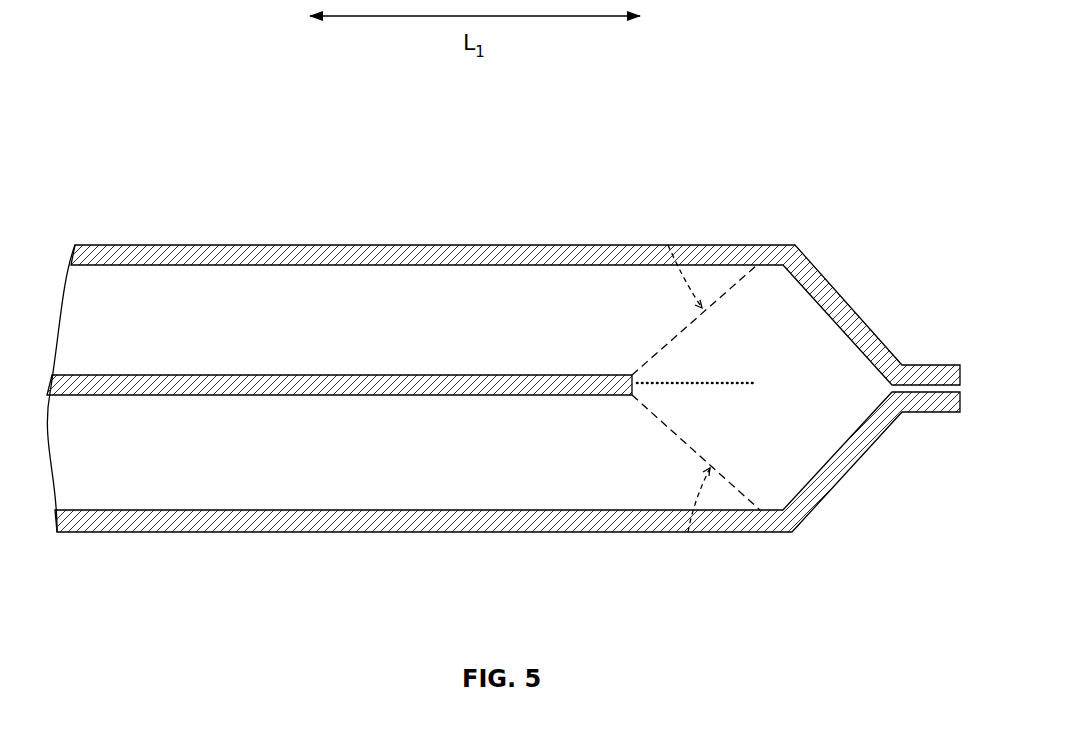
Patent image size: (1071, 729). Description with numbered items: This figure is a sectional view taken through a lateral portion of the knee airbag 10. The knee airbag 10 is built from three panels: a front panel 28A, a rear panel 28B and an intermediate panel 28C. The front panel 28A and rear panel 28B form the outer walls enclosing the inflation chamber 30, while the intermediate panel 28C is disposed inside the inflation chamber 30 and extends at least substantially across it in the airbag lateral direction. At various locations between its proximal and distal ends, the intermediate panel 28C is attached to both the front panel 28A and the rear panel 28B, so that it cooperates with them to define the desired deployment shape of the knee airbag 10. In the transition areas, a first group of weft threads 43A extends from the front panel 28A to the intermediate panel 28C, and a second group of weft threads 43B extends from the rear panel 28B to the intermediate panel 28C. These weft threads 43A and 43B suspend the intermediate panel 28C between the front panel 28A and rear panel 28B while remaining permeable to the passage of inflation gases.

The knee airbag 10 is at (740, 108).
The front panel 28A is at (553, 245).
The rear panel 28B is at (445, 534).
The intermediate panel 28C is at (513, 374).
The inflation chamber 30 is at (352, 312).
The first group of weft threads 43A is at (668, 245).
The second group of weft threads 43B is at (688, 532).